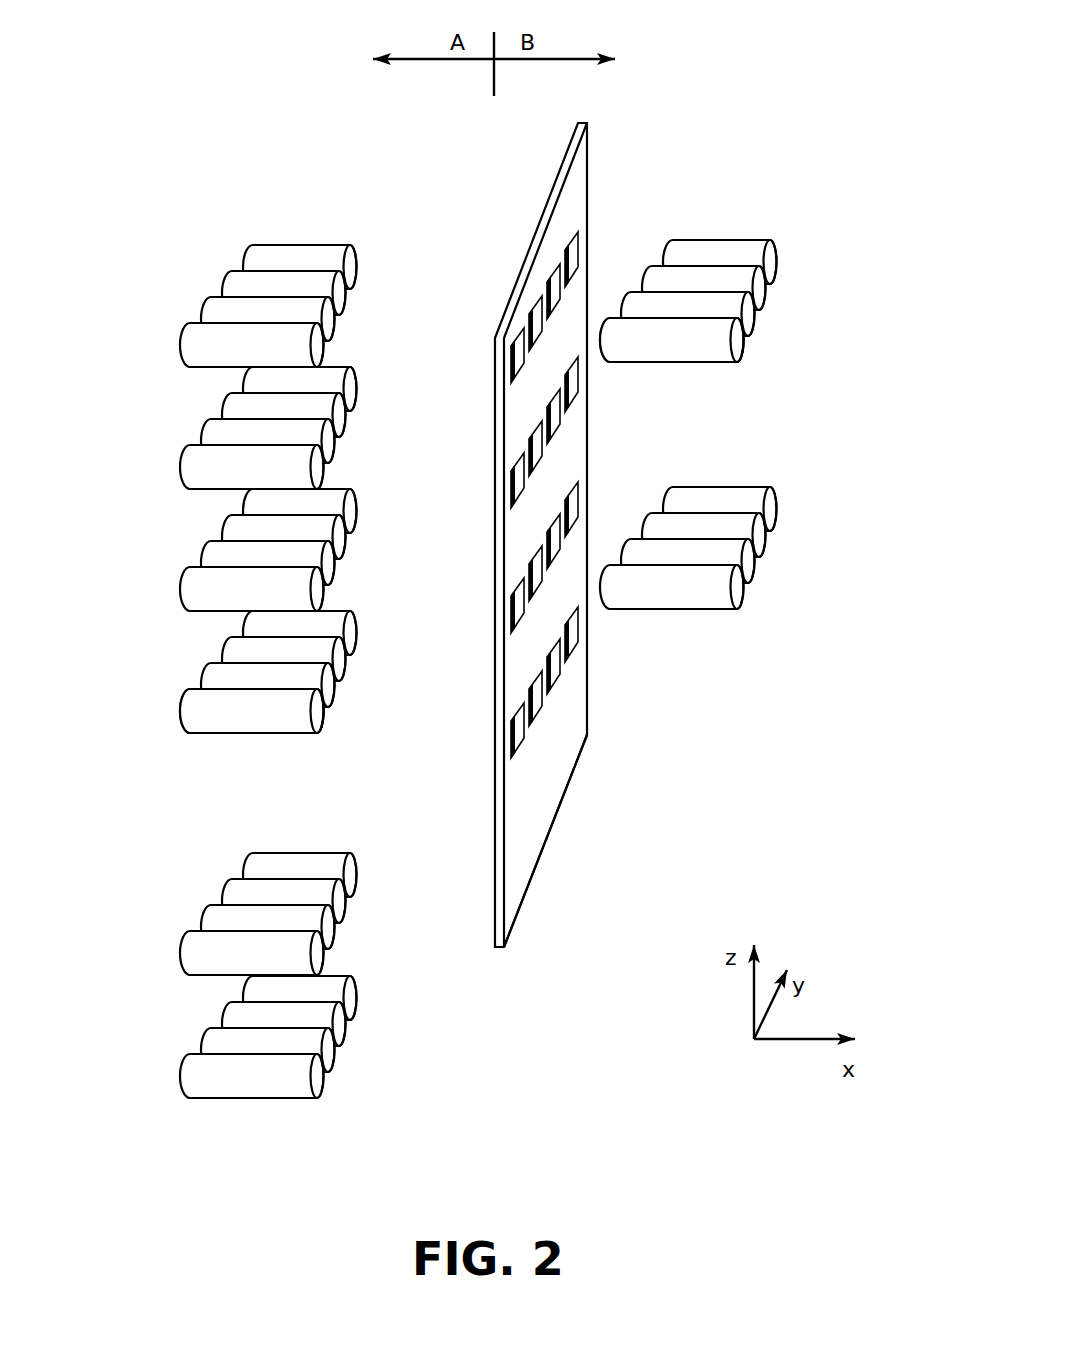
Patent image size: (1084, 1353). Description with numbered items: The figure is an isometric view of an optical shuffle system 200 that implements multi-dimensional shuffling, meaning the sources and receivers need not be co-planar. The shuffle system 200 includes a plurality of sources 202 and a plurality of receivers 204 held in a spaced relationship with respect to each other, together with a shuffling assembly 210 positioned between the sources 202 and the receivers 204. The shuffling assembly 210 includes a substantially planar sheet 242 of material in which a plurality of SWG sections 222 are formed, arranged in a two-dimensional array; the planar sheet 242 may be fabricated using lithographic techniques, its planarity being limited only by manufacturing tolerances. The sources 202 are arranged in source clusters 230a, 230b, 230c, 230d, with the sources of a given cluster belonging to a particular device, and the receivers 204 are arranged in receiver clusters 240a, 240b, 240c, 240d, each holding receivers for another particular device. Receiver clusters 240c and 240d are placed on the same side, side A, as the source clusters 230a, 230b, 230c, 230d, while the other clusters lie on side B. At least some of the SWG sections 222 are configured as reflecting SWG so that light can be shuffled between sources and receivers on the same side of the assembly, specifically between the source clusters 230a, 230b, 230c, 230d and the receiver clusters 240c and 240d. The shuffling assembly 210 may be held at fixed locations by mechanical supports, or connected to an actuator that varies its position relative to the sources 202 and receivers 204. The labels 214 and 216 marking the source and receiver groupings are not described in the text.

The optical shuffle system 200 is at (283, 143).
The sources 202 is at (256, 733).
The receivers 204 is at (678, 362).
The shuffling assembly 210 is at (558, 605).
The transmitter array 214 is at (200, 245).
The receiver array 216 is at (677, 213).
The SWG sections 222 is at (538, 710).
The source cluster 230a is at (197, 310).
The source cluster 230b is at (197, 429).
The source cluster 230c is at (197, 548).
The source cluster 230d is at (210, 667).
The receiver cluster 240a is at (790, 306).
The receiver cluster 240b is at (765, 605).
The receiver cluster 240c is at (350, 936).
The receiver cluster 240d is at (335, 1108).
The planar sheet 242 is at (523, 905).